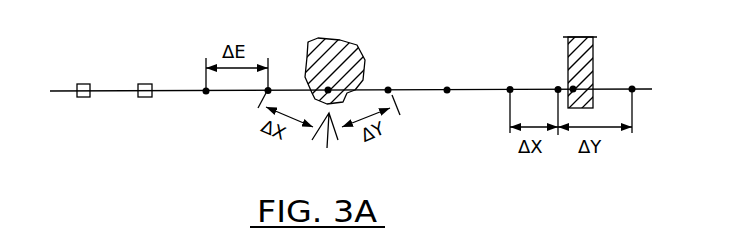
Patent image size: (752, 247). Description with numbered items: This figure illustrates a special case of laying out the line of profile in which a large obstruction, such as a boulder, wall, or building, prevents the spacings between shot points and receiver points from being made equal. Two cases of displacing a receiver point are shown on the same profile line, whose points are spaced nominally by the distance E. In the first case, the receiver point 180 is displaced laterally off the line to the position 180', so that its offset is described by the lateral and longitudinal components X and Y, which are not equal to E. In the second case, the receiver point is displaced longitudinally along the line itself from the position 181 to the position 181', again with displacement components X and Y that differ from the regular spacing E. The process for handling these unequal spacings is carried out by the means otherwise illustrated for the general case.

The receiver point 180 is at (366, 63).
The laterally displaced receiver point 180' is at (336, 144).
The receiver point 181 is at (566, 77).
The longitudinally displaced receiver point 181' is at (521, 67).